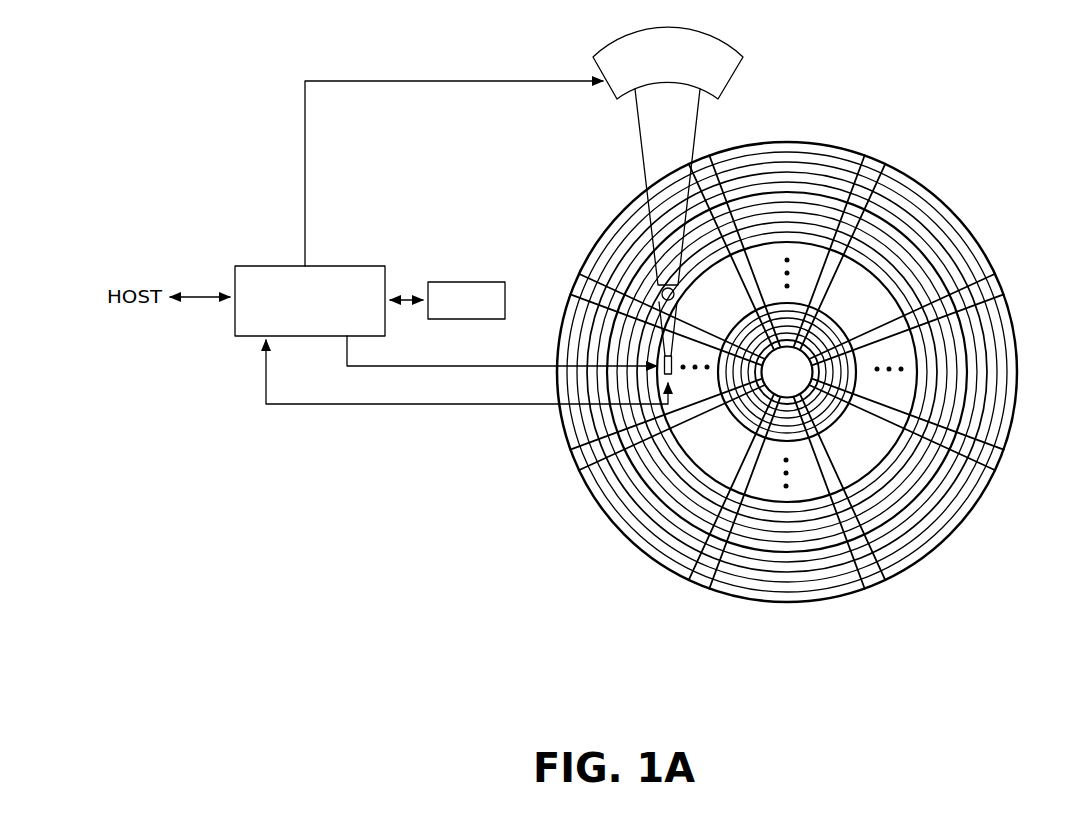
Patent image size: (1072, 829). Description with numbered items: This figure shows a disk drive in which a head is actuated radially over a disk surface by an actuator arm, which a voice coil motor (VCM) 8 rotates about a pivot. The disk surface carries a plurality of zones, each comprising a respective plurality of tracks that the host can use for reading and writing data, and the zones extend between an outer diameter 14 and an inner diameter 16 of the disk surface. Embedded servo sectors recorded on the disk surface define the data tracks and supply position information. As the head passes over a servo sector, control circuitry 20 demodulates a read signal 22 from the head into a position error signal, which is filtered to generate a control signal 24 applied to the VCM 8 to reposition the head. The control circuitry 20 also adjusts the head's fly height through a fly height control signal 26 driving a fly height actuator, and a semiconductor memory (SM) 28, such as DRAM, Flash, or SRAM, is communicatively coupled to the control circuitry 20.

The voice coil motor (VCM) 8 is at (612, 97).
The outer diameter (OD) 14 is at (949, 544).
The inner diameter (ID) 16 is at (788, 399).
The control circuitry 20 is at (358, 266).
The read signal 22 is at (402, 406).
The control signal 24 is at (304, 204).
The fly height control signal 26 is at (346, 362).
The semiconductor memory (SM) 28 is at (458, 282).